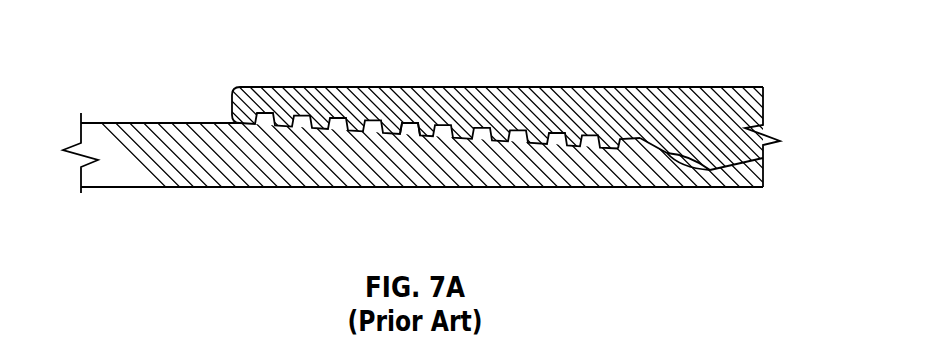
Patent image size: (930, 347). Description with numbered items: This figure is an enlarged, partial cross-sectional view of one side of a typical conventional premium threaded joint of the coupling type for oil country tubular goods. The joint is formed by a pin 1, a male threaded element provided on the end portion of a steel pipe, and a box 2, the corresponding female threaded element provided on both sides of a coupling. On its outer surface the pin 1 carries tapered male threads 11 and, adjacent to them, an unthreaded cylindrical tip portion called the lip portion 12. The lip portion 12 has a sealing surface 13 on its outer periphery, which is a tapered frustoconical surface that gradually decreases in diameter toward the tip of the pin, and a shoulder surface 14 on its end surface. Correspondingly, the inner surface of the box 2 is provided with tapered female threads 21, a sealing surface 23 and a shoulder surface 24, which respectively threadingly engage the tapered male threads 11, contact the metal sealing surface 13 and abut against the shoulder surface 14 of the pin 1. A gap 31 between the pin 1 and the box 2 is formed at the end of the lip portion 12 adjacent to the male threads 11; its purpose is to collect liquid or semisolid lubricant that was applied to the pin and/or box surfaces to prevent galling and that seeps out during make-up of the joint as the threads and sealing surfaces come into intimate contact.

The pin 1 is at (212, 180).
The tapered male threads 11 is at (401, 130).
The lip portion 12 is at (615, 173).
The sealing surface 13 is at (678, 160).
The shoulder surface 14 is at (708, 165).
The box 2 is at (548, 122).
The tapered female threads 21 is at (502, 135).
The sealing surface 23 is at (700, 160).
The shoulder surface 24 is at (763, 158).
The gap 31 is at (655, 145).